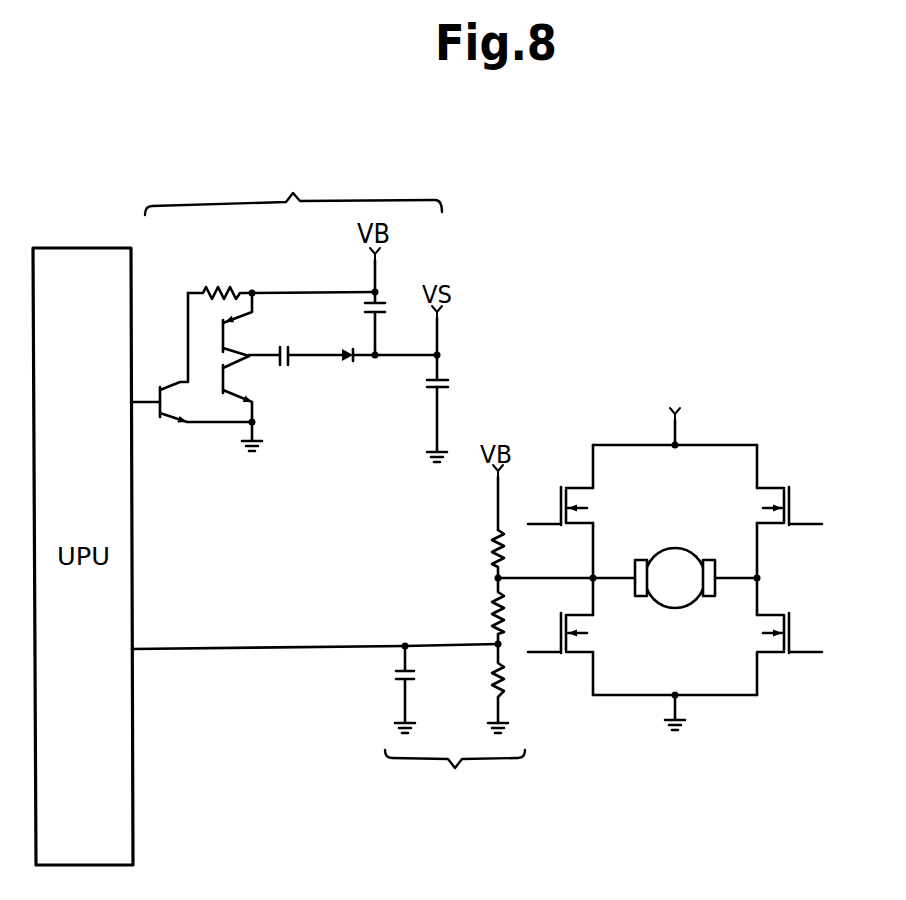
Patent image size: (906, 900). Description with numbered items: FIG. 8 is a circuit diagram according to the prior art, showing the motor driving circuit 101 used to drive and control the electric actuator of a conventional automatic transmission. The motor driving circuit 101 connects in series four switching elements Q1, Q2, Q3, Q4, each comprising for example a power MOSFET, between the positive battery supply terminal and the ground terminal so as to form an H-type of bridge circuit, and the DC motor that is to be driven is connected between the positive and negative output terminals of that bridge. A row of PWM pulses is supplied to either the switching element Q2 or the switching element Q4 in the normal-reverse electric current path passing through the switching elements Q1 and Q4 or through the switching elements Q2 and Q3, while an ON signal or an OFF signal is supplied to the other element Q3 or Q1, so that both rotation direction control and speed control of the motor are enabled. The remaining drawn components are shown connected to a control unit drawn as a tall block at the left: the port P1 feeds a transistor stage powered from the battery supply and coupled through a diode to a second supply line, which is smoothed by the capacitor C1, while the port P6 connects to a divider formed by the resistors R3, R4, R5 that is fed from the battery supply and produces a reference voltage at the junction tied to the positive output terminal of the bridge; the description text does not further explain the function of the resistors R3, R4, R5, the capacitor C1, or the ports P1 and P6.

The motor driving circuit 101 is at (822, 370).
The switching element Q1 is at (579, 506).
The switching element Q2 is at (580, 654).
The switching element Q3 is at (768, 506).
The switching element Q4 is at (768, 654).
The resistor R3 (reference voltage VR) R3 is at (468, 545).
The resistor R4 is at (479, 611).
The resistor R5 is at (479, 683).
The capacitor C1 is at (420, 386).
The microprocessor port P1 is at (124, 403).
The microprocessor port P6 is at (295, 647).